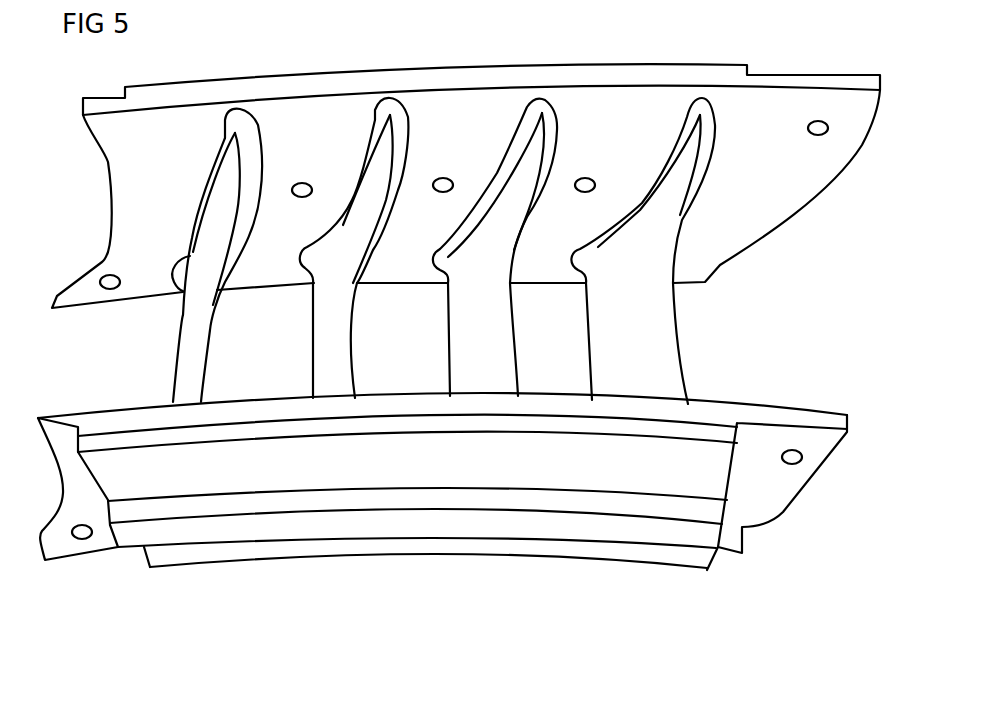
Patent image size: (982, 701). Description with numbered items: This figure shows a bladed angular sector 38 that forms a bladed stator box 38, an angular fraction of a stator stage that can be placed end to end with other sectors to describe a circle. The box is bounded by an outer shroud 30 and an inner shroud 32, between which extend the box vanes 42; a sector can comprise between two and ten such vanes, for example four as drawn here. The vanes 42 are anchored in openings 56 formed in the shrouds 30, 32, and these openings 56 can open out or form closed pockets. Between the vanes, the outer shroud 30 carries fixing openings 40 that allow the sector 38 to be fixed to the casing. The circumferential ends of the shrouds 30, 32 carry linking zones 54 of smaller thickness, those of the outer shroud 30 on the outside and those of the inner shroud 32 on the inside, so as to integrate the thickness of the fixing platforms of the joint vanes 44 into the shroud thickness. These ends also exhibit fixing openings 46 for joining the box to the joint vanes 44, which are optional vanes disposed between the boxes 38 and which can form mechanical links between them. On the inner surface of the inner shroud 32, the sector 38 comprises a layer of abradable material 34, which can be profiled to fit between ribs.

The outer shroud 30 is at (385, 262).
The inner shroud 32 is at (407, 407).
The layer of abradable material 34 is at (485, 530).
The bladed angular sector 38 is at (298, 622).
The fixing openings 40 is at (307, 181).
The box vanes 42 is at (187, 363).
The joint vanes 44 is at (350, 697).
The fixing openings 46 is at (112, 278).
The linking zones 54 is at (107, 108).
The openings 56 is at (323, 240).